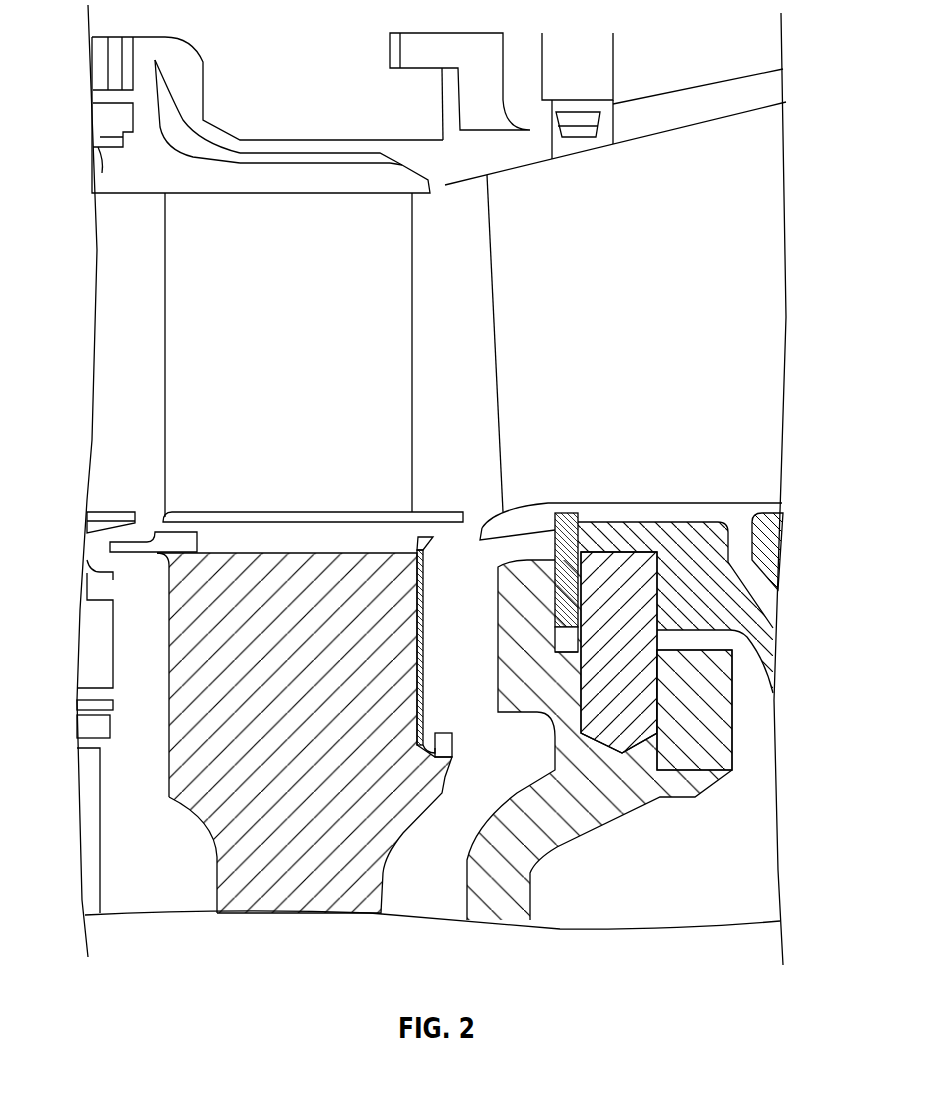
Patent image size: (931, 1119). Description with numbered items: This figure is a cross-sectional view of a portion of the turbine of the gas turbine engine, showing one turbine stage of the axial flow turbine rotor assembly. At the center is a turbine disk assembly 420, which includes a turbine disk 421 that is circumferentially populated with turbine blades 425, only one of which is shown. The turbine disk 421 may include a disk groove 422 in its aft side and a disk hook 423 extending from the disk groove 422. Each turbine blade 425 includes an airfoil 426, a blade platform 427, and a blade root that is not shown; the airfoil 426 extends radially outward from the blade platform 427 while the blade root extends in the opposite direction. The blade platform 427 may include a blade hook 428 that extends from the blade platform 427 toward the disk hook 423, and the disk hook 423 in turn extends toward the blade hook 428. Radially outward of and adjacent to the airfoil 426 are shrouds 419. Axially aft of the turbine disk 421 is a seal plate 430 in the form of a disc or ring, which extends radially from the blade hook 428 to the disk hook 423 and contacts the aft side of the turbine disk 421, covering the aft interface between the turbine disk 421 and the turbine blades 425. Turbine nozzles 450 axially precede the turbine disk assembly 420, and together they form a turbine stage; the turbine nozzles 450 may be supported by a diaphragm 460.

The shroud 419 is at (127, 180).
The turbine disk assembly 420 is at (170, 797).
The turbine disk 421 is at (230, 733).
The disk groove 422 is at (435, 753).
The disk hook 423 is at (452, 745).
The turbine blade 425 is at (163, 523).
The airfoil 426 is at (180, 375).
The blade platform 427 is at (302, 513).
The blade hook 428 is at (440, 548).
The seal plate 430 is at (423, 678).
The turbine nozzle 450 is at (778, 302).
The diaphragm 460 is at (595, 820).